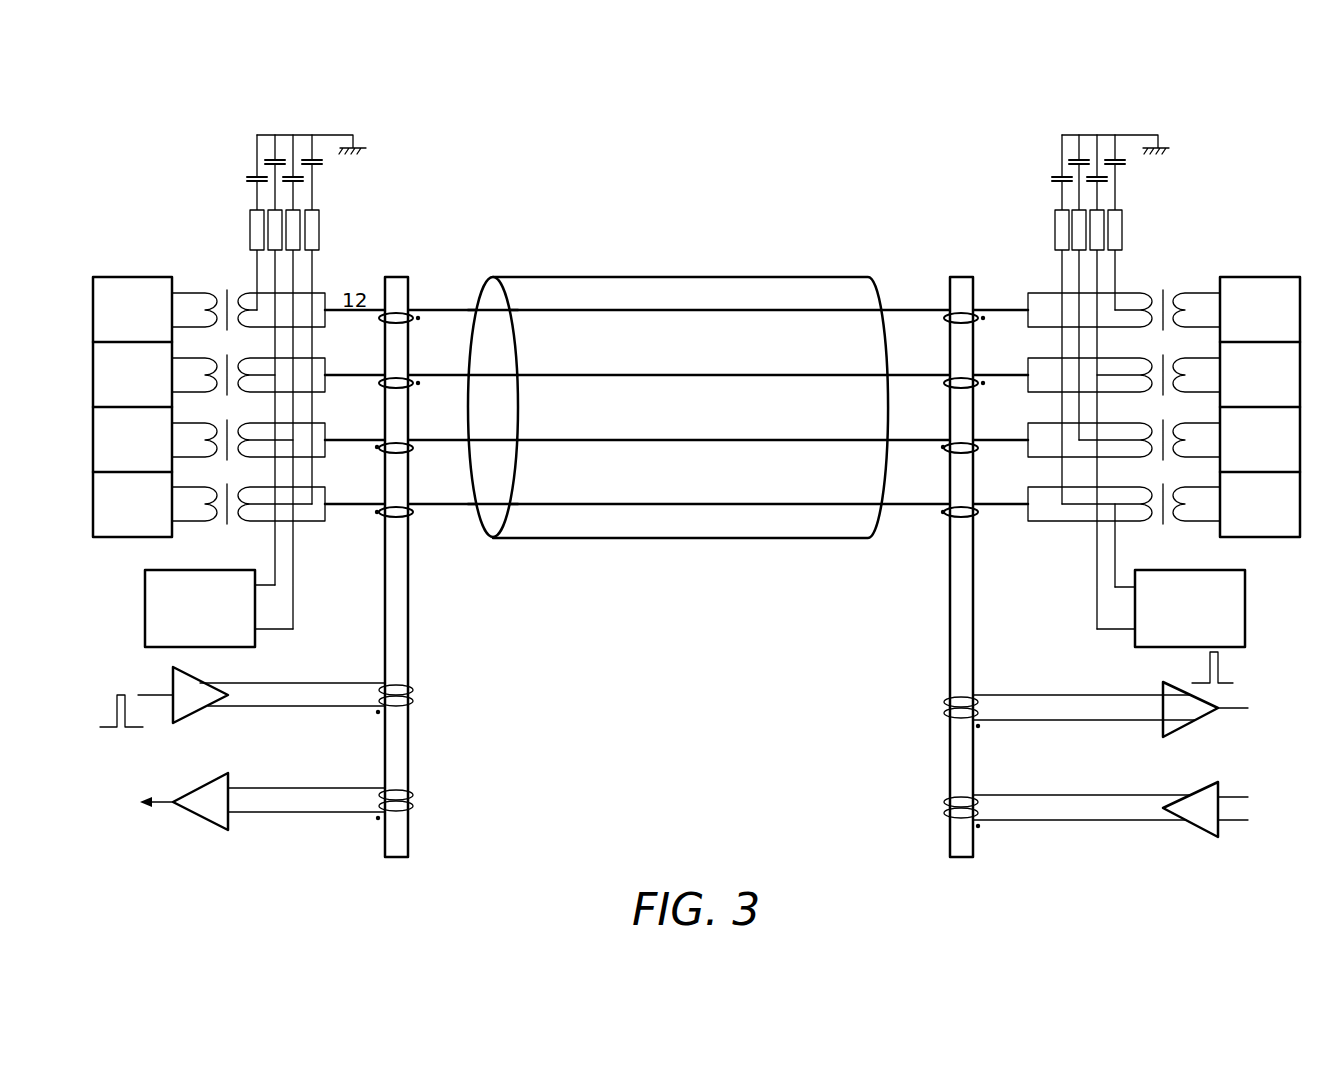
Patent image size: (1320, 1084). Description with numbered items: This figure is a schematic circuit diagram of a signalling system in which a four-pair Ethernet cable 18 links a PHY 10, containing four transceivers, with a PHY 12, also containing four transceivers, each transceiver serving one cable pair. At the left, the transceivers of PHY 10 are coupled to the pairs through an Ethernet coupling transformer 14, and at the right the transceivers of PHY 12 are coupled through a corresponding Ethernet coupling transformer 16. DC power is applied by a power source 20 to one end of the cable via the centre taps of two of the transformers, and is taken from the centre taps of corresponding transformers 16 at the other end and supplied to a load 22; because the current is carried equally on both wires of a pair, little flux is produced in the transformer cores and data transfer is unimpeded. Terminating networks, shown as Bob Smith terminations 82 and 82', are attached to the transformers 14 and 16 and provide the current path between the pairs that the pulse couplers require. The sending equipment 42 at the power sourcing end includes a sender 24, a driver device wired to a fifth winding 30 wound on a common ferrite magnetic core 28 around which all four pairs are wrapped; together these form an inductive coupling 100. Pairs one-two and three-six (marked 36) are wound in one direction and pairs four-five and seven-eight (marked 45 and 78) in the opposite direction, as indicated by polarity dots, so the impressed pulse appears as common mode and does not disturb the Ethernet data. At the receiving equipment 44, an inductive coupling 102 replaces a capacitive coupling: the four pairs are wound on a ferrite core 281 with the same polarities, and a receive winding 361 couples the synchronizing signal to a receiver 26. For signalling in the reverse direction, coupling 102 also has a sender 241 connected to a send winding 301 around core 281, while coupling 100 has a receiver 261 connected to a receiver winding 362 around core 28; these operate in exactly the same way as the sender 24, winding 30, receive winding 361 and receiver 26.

The PHY 10 is at (147, 277).
The PHY 12 is at (1272, 277).
The Ethernet coupling transformer 14 is at (226, 279).
The Ethernet coupling transformer 16 is at (1162, 283).
The cable 18 is at (678, 277).
The power source 20 is at (145, 585).
The load 22 is at (1245, 585).
The sender 24 is at (173, 676).
The receiver 26 is at (1163, 688).
The ferrite magnetic core 28 is at (396, 277).
The fifth winding 30 is at (410, 690).
The pair 3-6 line 36 is at (676, 365).
The pair 4-5 line 45 is at (676, 430).
The pair 7-8 line 78 is at (676, 494).
The sending equipment 42 is at (300, 860).
The receiving equipment 44 is at (1057, 861).
The Bob Smith termination 82 is at (276, 361).
The Bob Smith termination 82' is at (1145, 361).
The inductive coupling 100 is at (356, 227).
The inductive coupling 102 is at (1004, 231).
The sender 241 is at (1218, 785).
The receiver 261 is at (228, 778).
The ferrite core 281 is at (961, 277).
The send winding 301 is at (950, 803).
The receive winding 361 is at (950, 703).
The receiver winding 362 is at (410, 795).